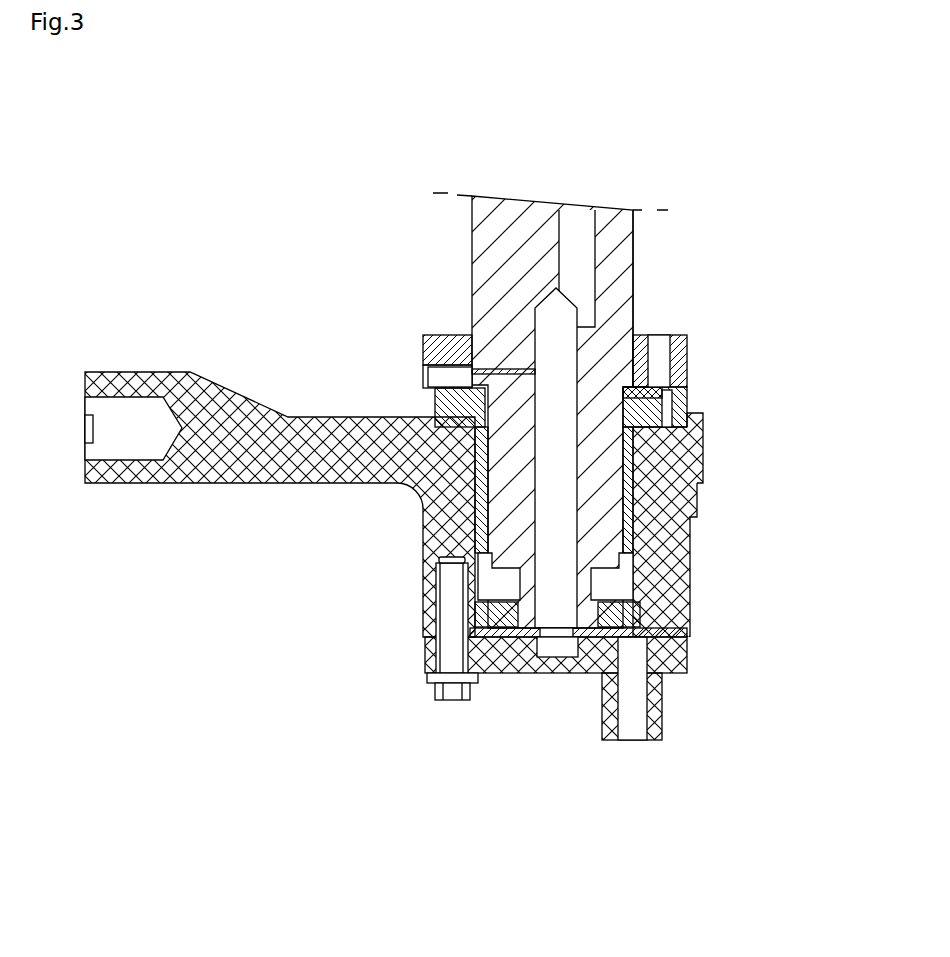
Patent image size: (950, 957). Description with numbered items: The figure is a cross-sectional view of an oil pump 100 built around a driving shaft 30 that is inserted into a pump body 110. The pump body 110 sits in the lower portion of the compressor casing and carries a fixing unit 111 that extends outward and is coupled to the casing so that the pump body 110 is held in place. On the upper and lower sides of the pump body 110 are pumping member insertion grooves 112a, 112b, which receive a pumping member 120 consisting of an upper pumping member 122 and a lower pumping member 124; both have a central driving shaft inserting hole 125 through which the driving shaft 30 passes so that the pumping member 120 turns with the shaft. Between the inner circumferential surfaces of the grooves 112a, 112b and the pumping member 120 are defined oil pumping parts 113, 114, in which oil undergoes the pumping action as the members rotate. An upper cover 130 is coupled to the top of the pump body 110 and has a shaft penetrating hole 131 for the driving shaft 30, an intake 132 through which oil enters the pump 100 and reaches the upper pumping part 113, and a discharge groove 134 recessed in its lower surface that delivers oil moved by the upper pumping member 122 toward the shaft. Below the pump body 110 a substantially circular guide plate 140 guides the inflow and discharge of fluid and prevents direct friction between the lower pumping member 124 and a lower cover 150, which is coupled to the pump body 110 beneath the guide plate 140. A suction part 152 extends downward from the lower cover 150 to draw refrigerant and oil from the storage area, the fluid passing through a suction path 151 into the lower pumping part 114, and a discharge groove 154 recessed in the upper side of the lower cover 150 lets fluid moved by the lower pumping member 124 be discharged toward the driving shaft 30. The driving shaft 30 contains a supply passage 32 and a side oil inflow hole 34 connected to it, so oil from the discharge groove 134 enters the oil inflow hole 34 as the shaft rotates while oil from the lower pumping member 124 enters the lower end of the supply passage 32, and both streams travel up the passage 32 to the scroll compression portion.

The driving shaft 30 is at (487, 210).
The supply passage 32 is at (577, 225).
The oil inflow hole 34 is at (507, 365).
The oil pump 100 is at (378, 540).
The pump body 110 is at (423, 585).
The fixing unit 111 is at (227, 387).
The pumping member insertion groove 112a is at (313, 483).
The pumping member insertion groove 112b is at (447, 612).
The oil pumping part 113 is at (668, 408).
The oil pumping part 114 is at (640, 617).
The pumping member 120 is at (777, 452).
The upper pumping member 122 is at (695, 428).
The lower pumping member 124 is at (690, 587).
The driving shaft inserting hole 125 is at (672, 393).
The upper cover 130 is at (688, 345).
The shaft penetrating hole 131 is at (613, 350).
The intake 132 is at (661, 360).
The discharge groove 134 is at (423, 377).
The guide plate 140 is at (513, 673).
The lower cover 150 is at (677, 676).
The suction path 151 is at (633, 735).
The suction part 152 is at (662, 729).
The discharge groove 154 is at (558, 648).